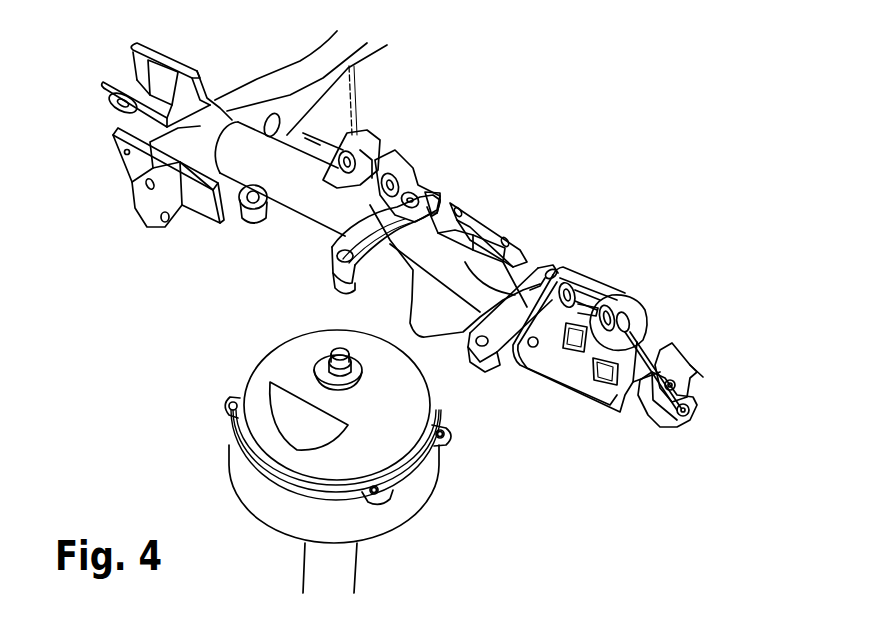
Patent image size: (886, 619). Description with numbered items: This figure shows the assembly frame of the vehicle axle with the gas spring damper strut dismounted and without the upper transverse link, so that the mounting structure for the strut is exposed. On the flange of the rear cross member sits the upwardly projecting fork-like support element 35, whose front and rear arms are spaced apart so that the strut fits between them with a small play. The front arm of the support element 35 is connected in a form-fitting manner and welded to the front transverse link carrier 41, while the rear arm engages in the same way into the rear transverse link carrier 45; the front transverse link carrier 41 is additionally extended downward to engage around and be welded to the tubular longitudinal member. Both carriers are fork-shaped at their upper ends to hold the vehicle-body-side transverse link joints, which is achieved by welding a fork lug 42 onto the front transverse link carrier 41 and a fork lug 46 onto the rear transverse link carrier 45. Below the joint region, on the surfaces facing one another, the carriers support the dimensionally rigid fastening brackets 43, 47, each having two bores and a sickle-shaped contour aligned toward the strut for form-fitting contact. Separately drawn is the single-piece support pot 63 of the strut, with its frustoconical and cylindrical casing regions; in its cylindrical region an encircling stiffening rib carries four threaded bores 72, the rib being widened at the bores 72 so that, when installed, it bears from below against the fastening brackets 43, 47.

The fork-like support element 35 is at (462, 285).
The front transverse link carrier 41 is at (400, 167).
The fork lug 42 is at (365, 147).
The fastening bracket 43 is at (432, 198).
The rear transverse link carrier 45 is at (583, 282).
The fork lug 46 is at (625, 305).
The fastening bracket 47 is at (556, 272).
The support pot 63 is at (408, 388).
The threaded bore 72 is at (378, 490).